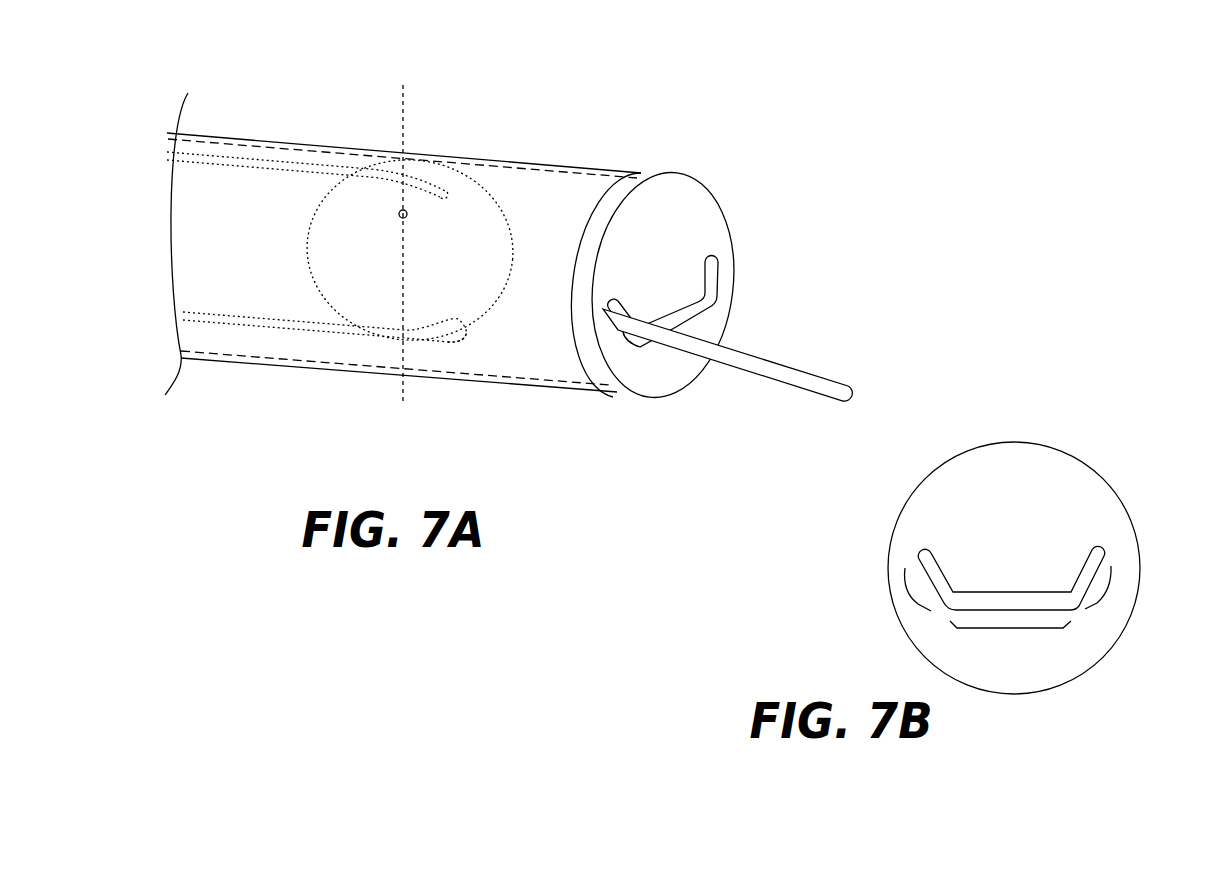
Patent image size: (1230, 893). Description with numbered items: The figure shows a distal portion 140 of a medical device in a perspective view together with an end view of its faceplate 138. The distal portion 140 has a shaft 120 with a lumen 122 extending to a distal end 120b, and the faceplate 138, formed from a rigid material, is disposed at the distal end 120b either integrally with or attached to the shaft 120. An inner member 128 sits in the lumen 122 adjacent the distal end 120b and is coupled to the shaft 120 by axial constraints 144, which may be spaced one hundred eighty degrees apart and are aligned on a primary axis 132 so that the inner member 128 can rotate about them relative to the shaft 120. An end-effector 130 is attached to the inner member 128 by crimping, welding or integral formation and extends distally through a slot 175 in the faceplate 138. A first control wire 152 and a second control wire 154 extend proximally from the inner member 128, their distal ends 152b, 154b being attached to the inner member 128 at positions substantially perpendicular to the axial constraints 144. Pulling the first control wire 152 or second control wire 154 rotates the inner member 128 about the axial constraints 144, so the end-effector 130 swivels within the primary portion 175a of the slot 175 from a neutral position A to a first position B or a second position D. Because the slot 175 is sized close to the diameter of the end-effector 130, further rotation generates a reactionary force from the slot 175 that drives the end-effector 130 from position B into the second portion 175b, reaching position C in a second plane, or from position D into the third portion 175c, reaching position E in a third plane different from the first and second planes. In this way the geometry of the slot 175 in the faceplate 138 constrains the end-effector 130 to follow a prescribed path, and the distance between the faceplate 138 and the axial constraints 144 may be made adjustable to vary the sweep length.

In FIG. 7A, the distal portion 140 is at (118, 76).
In FIG. 7A, the shaft 120 is at (275, 141).
In FIG. 7A, the distal end of shaft 120b is at (610, 393).
In FIG. 7A, the lumen 122 is at (333, 370).
In FIG. 7A, the inner member 128 is at (417, 180).
In FIG. 7A, the end-effector 130 is at (823, 390).
In FIG. 7A, the primary axis 132 is at (402, 260).
In FIG. 7A, the faceplate 138 is at (697, 193).
In FIG. 7B, the faceplate 138 is at (1063, 475).
In FIG. 7A, the axial constraints 144 is at (407, 211).
In FIG. 7A, the first control wire 152 is at (207, 157).
In FIG. 7A, the distal end of first control wire 152b is at (442, 197).
In FIG. 7A, the second control wire 154 is at (239, 314).
In FIG. 7A, the distal end of second control wire 154b is at (435, 318).
In FIG. 7A, the slot 175 is at (715, 295).
In FIG. 7B, the slot 175 is at (1072, 603).
In FIG. 7B, the primary portion of slot 175a is at (1003, 630).
In FIG. 7B, the second portion of slot 175b is at (905, 585).
In FIG. 7B, the third portion of slot 175c is at (1107, 590).
In FIG. 7B, the neutral position A is at (1007, 592).
In FIG. 7B, the first position B is at (957, 592).
In FIG. 7B, the position C is at (928, 548).
In FIG. 7B, the second position D is at (1063, 592).
In FIG. 7B, the position E is at (1097, 548).